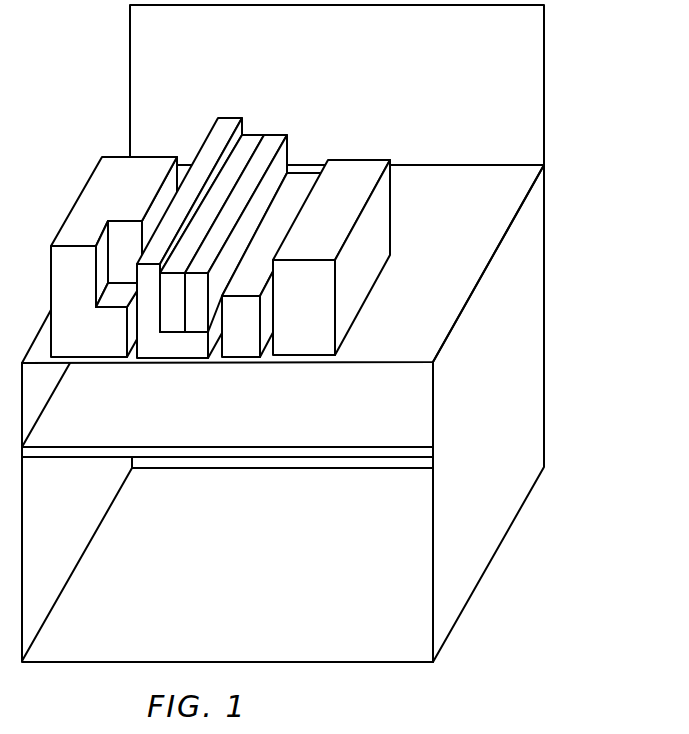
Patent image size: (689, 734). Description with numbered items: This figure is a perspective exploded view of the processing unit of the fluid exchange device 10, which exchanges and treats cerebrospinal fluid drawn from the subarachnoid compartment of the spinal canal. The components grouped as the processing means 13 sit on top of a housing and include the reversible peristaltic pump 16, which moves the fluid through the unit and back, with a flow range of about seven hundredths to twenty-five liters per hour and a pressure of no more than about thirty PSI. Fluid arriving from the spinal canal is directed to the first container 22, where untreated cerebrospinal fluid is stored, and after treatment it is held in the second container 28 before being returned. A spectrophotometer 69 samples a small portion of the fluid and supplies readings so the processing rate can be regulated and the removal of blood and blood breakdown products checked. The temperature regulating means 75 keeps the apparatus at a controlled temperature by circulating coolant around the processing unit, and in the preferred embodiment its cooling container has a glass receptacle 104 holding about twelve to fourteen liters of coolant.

The fluid exchange device 10 is at (581, 488).
The processing means 13 is at (290, 191).
The reversible peristaltic pump 16 is at (358, 175).
The first container 22 is at (268, 147).
The second container 28 is at (248, 145).
The spectrophotometer 69 is at (300, 180).
The temperature regulating means 75 is at (120, 173).
The glass receptacle 104 is at (224, 127).